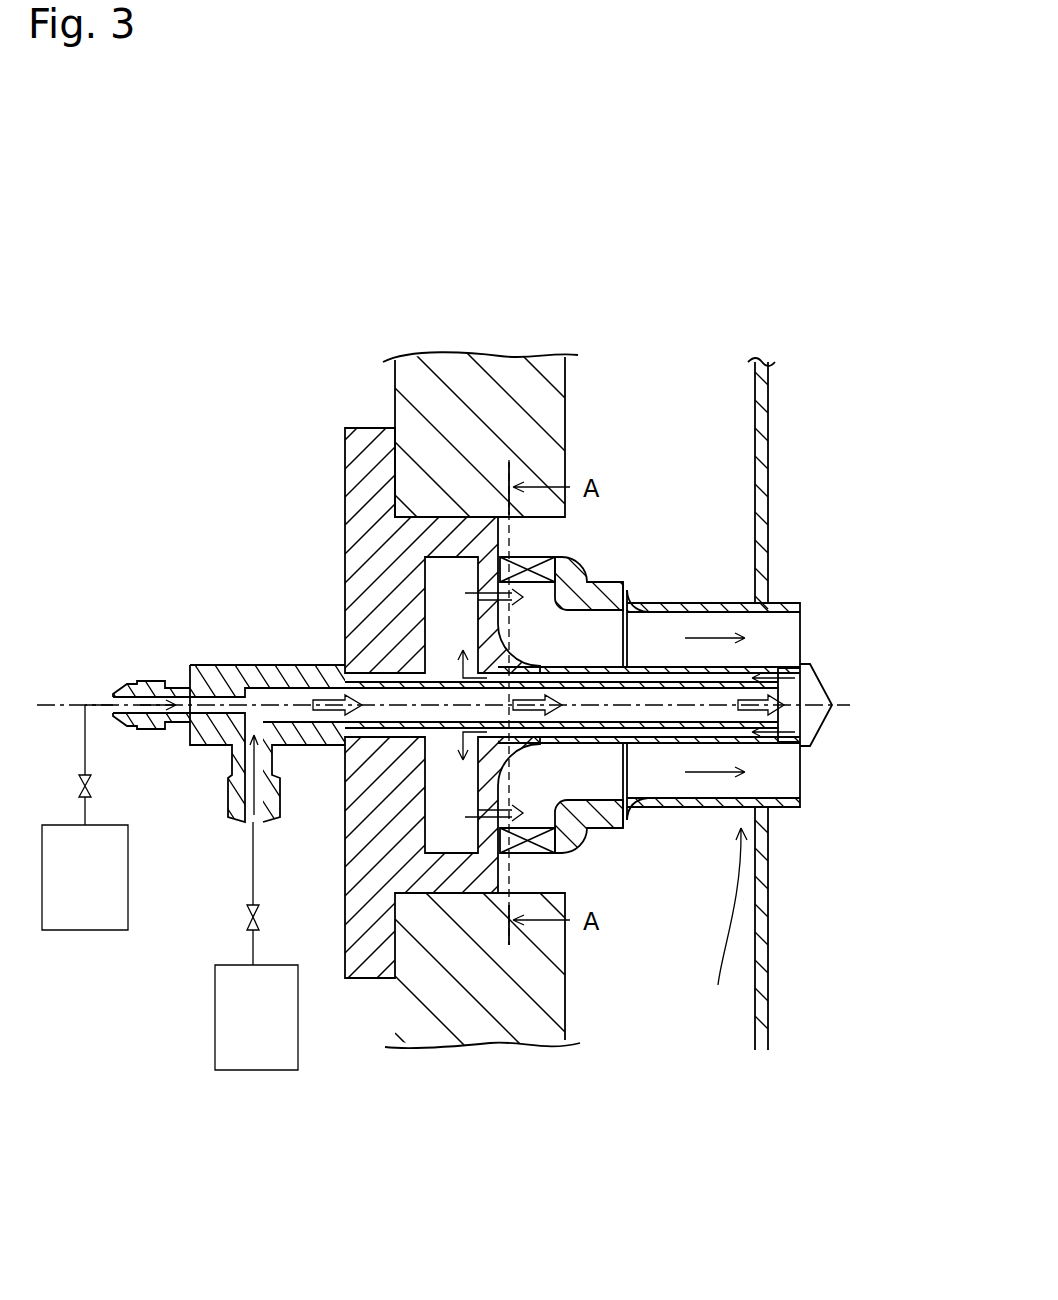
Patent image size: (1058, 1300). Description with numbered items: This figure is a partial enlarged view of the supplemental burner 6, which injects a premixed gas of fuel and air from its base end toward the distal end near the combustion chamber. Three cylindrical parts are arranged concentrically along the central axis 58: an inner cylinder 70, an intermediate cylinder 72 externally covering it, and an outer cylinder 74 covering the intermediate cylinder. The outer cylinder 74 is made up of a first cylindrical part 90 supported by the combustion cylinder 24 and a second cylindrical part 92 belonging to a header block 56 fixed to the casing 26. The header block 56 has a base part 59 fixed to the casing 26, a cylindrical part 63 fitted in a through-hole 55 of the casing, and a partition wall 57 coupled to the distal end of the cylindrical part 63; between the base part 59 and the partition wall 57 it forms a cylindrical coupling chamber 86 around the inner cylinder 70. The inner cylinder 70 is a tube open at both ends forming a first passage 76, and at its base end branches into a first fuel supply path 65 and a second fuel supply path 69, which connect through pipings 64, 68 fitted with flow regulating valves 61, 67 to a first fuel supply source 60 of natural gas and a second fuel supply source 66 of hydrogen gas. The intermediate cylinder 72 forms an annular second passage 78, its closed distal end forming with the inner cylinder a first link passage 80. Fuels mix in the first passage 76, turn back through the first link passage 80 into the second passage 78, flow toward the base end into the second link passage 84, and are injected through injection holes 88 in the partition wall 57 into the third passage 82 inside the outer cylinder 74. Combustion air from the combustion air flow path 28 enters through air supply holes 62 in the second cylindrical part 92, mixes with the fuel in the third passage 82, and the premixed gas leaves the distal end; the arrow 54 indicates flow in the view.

The supplemental burner 6 is at (248, 185).
The combustion cylinder 24 is at (768, 420).
The casing 26 is at (551, 402).
The combustion air flow path 28 is at (677, 1148).
The gas flow direction 54 is at (717, 923).
The through-hole 55 is at (379, 1019).
The header block 56 is at (355, 545).
The partition wall 57 is at (490, 630).
The central axis 58 is at (45, 705).
The base part 59 is at (372, 428).
The first fuel supply source 60 is at (283, 1032).
The flow regulating valve 61 is at (246, 920).
The air supply holes 62 is at (547, 837).
The cylindrical part 63 is at (529, 681).
The piping 64 is at (250, 867).
The first fuel supply path 65 is at (260, 807).
The second fuel supply source 66 is at (110, 887).
The flow regulating valve 67 is at (95, 790).
The piping 68 is at (87, 745).
The second fuel supply path 69 is at (190, 698).
The inner cylinder 70 is at (780, 686).
The intermediate cylinder 72 is at (753, 677).
The outer cylinder 74 is at (788, 603).
The first passage 76 is at (643, 720).
The second passage 78 is at (677, 677).
The first link passage 80 is at (790, 718).
The third passage 82 is at (782, 780).
The second link passage 84 is at (453, 835).
The coupling chamber 86 is at (437, 567).
The injection holes 88 is at (476, 597).
The first cylindrical part 90 is at (735, 603).
The second cylindrical part 92 is at (582, 578).